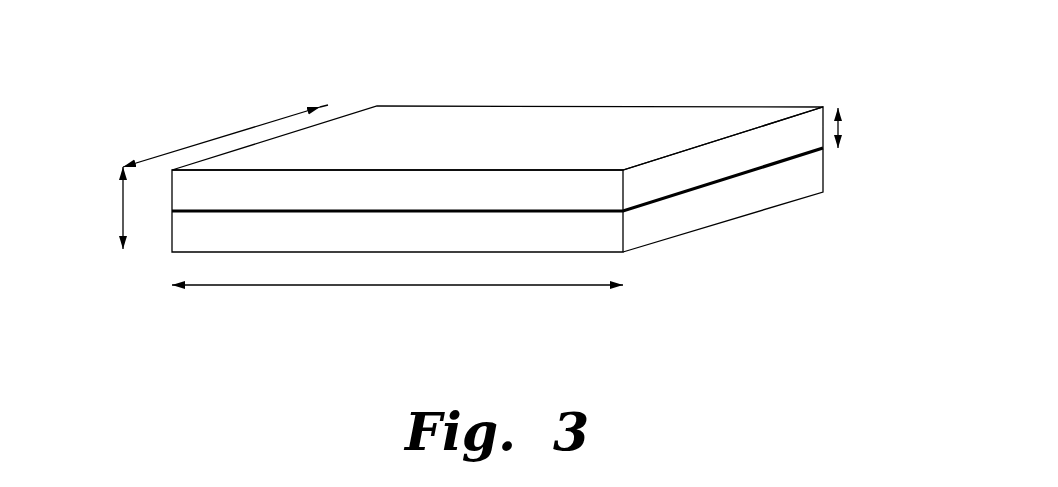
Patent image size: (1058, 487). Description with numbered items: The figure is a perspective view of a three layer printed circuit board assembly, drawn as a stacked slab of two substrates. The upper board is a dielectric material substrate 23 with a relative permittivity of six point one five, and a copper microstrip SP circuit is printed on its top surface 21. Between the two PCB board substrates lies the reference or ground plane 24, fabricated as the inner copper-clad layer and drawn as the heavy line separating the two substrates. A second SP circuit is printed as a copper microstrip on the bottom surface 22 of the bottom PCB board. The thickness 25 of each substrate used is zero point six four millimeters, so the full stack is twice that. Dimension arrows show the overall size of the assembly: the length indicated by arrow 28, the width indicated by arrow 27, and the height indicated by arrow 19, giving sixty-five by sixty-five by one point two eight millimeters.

The height arrow 19 is at (118, 217).
The top surface 21 is at (532, 132).
The bottom surface 22 is at (773, 216).
The dielectric material substrate 23 is at (283, 238).
The ground plane 24 is at (722, 180).
The thickness of the substrate 25 is at (842, 127).
The width arrow 27 is at (208, 139).
The length arrow 28 is at (398, 288).